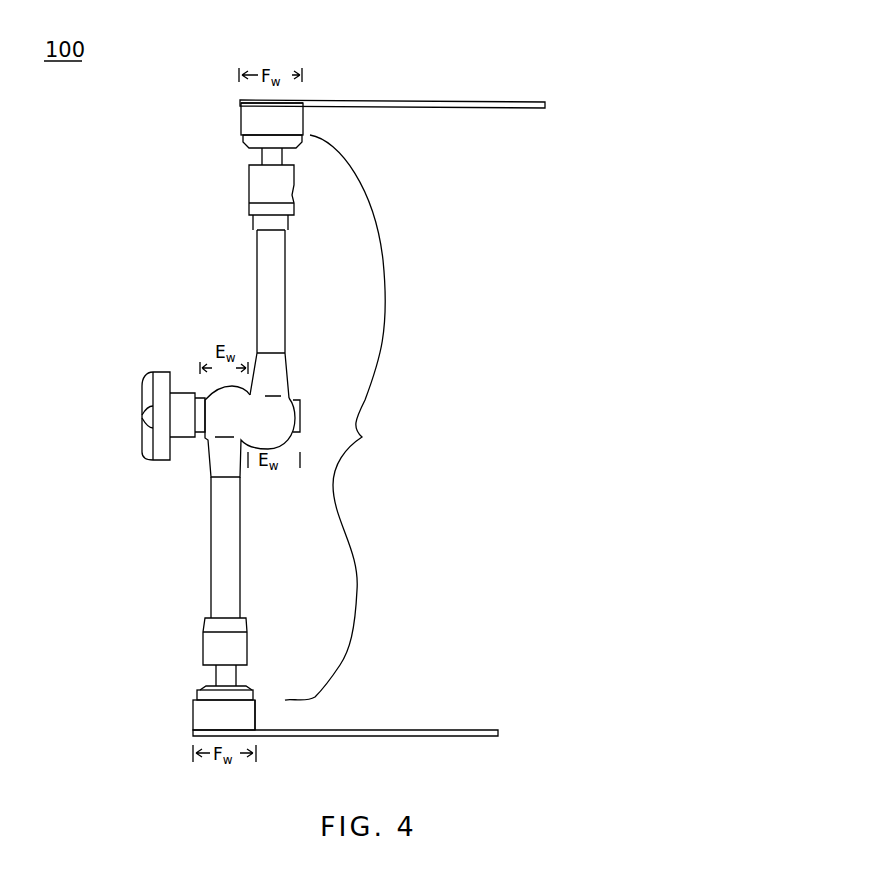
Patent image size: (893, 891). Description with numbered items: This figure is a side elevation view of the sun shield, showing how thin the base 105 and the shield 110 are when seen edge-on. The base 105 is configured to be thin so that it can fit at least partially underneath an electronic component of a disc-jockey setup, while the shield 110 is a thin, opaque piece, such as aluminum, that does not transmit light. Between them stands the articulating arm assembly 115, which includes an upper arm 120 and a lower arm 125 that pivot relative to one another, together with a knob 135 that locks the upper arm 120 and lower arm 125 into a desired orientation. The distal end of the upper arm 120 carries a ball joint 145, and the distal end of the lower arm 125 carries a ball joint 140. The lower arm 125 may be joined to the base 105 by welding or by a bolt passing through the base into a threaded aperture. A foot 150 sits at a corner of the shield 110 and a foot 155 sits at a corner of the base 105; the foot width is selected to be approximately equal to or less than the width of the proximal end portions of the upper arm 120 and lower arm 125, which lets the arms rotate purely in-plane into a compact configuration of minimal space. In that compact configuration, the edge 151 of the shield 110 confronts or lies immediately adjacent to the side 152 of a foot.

The base 105 is at (487, 730).
The shield 110 is at (513, 102).
The articulating arm assembly 115 is at (350, 417).
The upper arm 120 is at (257, 272).
The lower arm 125 is at (210, 542).
The knob 135 is at (160, 355).
The ball joint 140 is at (203, 648).
The ball joint 145 is at (249, 187).
The foot 150 is at (232, 126).
The edge 151 is at (240, 101).
The side 152 is at (256, 718).
The foot 155 is at (185, 723).